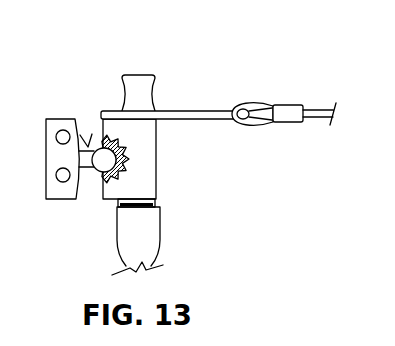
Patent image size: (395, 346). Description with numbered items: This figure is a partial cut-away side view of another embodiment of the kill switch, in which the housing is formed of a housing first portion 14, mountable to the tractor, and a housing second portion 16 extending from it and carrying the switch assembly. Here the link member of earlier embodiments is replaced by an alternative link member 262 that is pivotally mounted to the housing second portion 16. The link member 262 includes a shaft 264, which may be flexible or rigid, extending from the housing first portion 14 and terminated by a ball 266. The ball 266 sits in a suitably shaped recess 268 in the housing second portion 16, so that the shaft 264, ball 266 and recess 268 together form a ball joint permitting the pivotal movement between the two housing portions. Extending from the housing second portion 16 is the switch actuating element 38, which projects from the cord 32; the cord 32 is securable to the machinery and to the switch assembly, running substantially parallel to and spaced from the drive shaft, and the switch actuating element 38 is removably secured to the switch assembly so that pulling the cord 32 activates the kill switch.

The housing first portion 14 is at (63, 190).
The housing second portion 16 is at (140, 183).
The cord 32 is at (321, 112).
The switch actuating element 38 is at (197, 111).
The link member 262 is at (88, 147).
The shaft 264 is at (84, 162).
The ball 266 is at (104, 160).
The recess 268 is at (122, 145).